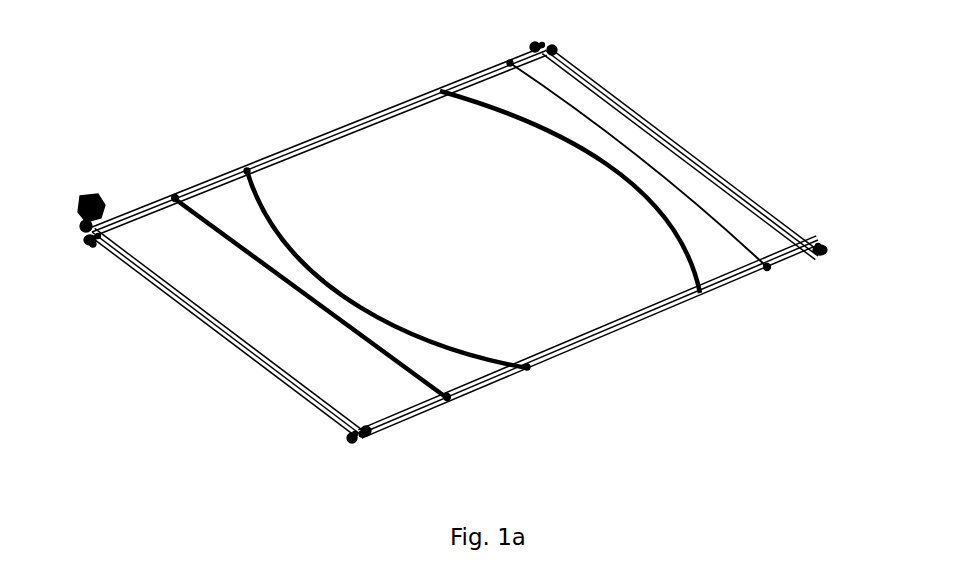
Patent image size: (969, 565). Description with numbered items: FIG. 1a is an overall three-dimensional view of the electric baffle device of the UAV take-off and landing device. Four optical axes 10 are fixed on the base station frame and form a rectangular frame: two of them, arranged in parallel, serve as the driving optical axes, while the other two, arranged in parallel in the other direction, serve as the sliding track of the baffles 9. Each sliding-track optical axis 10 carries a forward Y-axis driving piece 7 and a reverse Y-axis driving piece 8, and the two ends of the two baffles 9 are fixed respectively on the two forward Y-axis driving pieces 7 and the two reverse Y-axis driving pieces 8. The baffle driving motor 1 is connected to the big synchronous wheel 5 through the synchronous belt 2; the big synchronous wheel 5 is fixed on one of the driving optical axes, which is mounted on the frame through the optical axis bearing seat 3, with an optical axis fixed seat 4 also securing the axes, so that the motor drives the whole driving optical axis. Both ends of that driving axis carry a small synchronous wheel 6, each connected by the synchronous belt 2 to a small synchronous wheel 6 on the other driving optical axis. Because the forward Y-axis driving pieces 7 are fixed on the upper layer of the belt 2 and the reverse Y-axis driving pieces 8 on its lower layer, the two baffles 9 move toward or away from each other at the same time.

The baffle driving motor 1 is at (87, 200).
The big synchronous wheel synchronous belt 2 is at (246, 169).
The optical axis bearing seat 3 is at (81, 228).
The optical axis fixed seat 4 is at (532, 46).
The big synchronous wheel 5 is at (93, 244).
The small synchronous wheel 6 is at (541, 44).
The forward Y-axis driving piece 7 is at (176, 195).
The reverse Y-axis driving piece 8 is at (507, 63).
The baffle 9 is at (300, 275).
The optical axis 10 is at (345, 130).